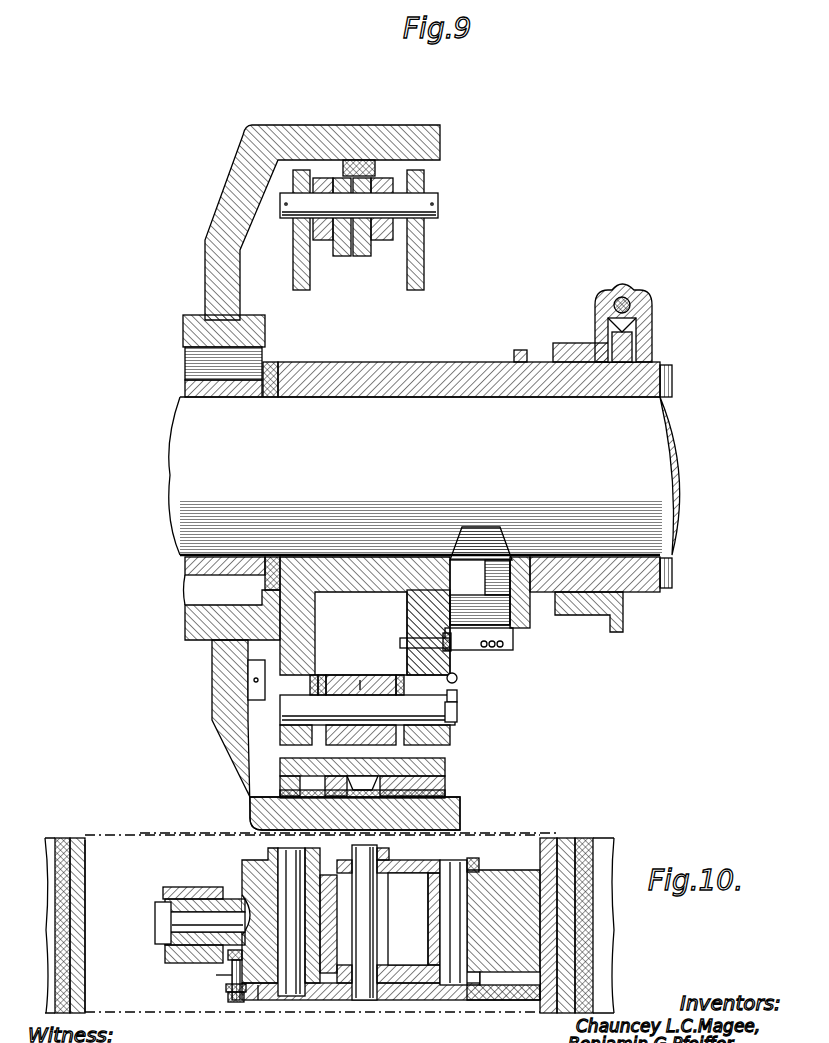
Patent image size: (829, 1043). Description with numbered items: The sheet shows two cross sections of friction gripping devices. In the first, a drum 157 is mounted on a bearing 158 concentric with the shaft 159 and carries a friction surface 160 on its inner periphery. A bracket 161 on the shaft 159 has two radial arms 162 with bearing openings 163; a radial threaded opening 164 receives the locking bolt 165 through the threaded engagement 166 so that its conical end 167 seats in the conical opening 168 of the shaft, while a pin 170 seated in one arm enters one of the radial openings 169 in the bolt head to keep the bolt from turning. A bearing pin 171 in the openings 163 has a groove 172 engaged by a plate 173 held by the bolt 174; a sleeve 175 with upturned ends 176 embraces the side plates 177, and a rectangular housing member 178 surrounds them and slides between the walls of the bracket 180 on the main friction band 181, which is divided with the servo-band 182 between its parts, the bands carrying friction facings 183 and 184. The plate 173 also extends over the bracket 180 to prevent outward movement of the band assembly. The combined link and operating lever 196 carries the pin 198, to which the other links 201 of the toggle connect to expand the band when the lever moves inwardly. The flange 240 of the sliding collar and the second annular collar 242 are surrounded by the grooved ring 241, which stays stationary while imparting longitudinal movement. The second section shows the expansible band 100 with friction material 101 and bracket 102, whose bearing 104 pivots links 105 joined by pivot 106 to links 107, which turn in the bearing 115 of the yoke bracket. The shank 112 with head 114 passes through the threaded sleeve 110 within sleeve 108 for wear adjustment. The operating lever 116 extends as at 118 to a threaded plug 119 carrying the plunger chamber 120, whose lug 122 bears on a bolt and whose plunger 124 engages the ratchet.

In FIG. 9, the combined link and operating lever 196 is at (380, 178).
In FIG. 9, the pin 198 is at (420, 201).
In FIG. 9, the links of the toggle link mechanism 201 is at (384, 260).
In FIG. 9, the bracket 161 is at (431, 372).
In FIG. 9, the circumferential flange 240 is at (574, 350).
In FIG. 9, the grooved ring 241 is at (648, 308).
In FIG. 9, the second annular collar 242 is at (645, 356).
In FIG. 9, the shaft 159 is at (670, 450).
In FIG. 9, the conical opening 168 is at (467, 527).
In FIG. 9, the conical end 167 is at (490, 545).
In FIG. 9, the radial openings 169 is at (515, 643).
In FIG. 9, the pin 170 is at (478, 648).
In FIG. 9, the radial threaded opening 164 is at (532, 606).
In FIG. 9, the locking bolt 165 is at (623, 612).
In FIG. 9, the radial arms 162 is at (300, 600).
In FIG. 9, the threaded engagement 166 is at (450, 602).
In FIG. 9, the bearing 158 is at (200, 606).
In FIG. 9, the drum 157 is at (296, 812).
In FIG. 9, the bearing pin 171 is at (290, 705).
In FIG. 9, the upturned ends 176 is at (316, 675).
In FIG. 9, the side plates 177 is at (323, 676).
In FIG. 9, the rectangular housing member 178 is at (358, 682).
In FIG. 9, the sleeve 175 is at (370, 675).
In FIG. 9, the bolt 174 is at (457, 676).
In FIG. 9, the plate 173 is at (458, 696).
In FIG. 9, the groove 172 is at (458, 714).
In FIG. 9, the bearing openings 163 is at (285, 730).
In FIG. 9, the bracket 180 is at (447, 765).
In FIG. 9, the facing of friction material 184 is at (332, 770).
In FIG. 9, the main friction band 181 is at (447, 780).
In FIG. 9, the servo-band 182 is at (400, 762).
In FIG. 9, the facing of friction material 183 is at (448, 798).
In FIG. 9, the friction surface 160 is at (435, 828).
In FIG. 10, the friction material 101 is at (66, 840).
In FIG. 10, the expansible band 100 is at (76, 886).
In FIG. 10, the bracket 102 is at (508, 880).
In FIG. 10, the bearing 104 is at (493, 1000).
In FIG. 10, the shank 112 is at (198, 897).
In FIG. 10, the threaded sleeve 110 is at (180, 885).
In FIG. 10, the head 114 is at (162, 914).
In FIG. 10, the centrally threaded sleeve 108 is at (166, 956).
In FIG. 10, the plunger 124 is at (228, 962).
In FIG. 10, the plunger chamber 120 is at (228, 985).
In FIG. 10, the extended portion of operating lever 118 is at (226, 990).
In FIG. 10, the threaded plug 119 is at (232, 1003).
In FIG. 10, the lug 122 is at (258, 1001).
In FIG. 10, the bearing 115 is at (297, 1001).
In FIG. 10, the pivot 106 is at (364, 1001).
In FIG. 10, the links of the toggle link mechanism 105 is at (408, 866).
In FIG. 10, the links of the toggle link mechanism 107 is at (338, 923).
In FIG. 10, the operating lever 116 is at (455, 1001).